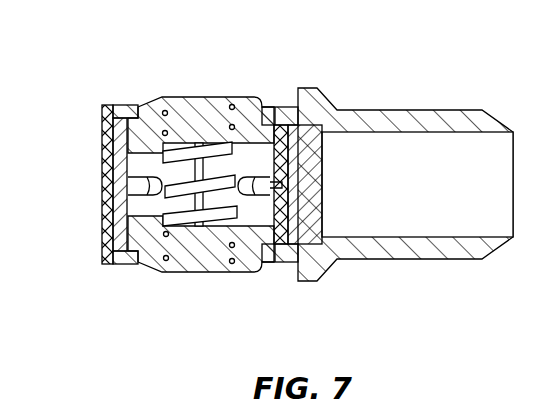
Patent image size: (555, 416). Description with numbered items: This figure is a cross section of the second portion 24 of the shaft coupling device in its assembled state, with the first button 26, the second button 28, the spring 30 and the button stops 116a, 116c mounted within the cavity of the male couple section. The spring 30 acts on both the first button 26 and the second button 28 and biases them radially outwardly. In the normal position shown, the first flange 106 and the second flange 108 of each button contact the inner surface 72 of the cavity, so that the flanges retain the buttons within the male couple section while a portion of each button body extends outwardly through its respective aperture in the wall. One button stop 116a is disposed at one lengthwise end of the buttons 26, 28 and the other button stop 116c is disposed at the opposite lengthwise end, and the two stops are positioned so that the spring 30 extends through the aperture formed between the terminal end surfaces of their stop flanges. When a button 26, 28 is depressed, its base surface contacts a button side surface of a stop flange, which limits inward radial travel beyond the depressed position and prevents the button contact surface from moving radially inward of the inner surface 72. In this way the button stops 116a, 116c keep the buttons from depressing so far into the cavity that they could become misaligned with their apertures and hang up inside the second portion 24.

The second portion 24 is at (357, 72).
The first button 26 is at (202, 272).
The second button 28 is at (202, 106).
The spring 30 is at (182, 228).
The inner surface 72 is at (105, 129).
The first flange 106 is at (110, 160).
The second flange 108 is at (275, 107).
The button stop 116a is at (305, 216).
The button stop 116c is at (108, 215).